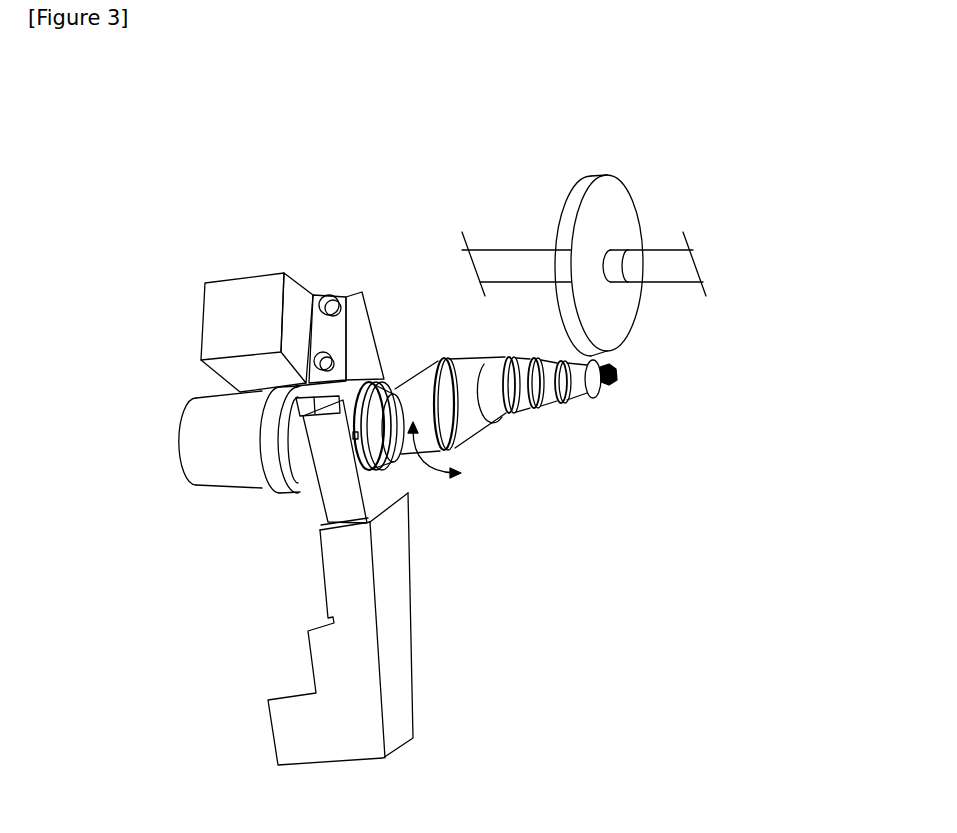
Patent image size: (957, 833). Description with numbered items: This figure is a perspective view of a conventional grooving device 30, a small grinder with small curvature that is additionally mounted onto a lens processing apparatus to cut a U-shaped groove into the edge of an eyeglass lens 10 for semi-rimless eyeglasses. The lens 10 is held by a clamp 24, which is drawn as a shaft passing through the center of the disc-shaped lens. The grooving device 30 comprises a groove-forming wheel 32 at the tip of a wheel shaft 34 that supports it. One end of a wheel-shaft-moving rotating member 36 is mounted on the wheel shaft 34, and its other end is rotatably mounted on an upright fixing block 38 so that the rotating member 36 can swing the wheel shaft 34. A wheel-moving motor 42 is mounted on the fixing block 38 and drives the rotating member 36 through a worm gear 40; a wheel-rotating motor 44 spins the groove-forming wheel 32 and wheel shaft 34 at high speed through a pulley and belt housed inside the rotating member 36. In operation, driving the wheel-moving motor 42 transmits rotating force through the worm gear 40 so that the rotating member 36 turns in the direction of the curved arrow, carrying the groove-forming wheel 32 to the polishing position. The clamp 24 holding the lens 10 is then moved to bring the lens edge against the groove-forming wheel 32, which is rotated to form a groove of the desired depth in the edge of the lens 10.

The eyeglass lens 10 is at (640, 240).
The clamp 24 is at (625, 239).
The grooving device 30 is at (324, 190).
The groove-forming wheel 32 is at (648, 421).
The wheel shaft 34 is at (579, 429).
The wheel-shaft-moving rotating member 36 is at (464, 437).
The fixing block 38 is at (389, 629).
The worm gear 40 is at (233, 479).
The wheel-moving motor 42 is at (235, 295).
The wheel-rotating motor 44 is at (182, 477).